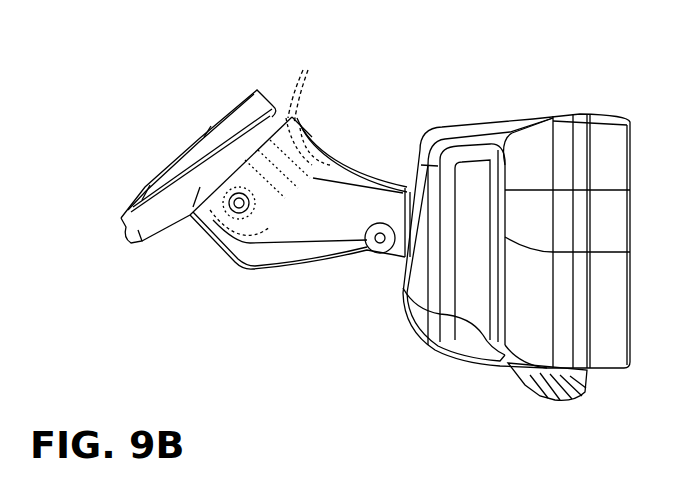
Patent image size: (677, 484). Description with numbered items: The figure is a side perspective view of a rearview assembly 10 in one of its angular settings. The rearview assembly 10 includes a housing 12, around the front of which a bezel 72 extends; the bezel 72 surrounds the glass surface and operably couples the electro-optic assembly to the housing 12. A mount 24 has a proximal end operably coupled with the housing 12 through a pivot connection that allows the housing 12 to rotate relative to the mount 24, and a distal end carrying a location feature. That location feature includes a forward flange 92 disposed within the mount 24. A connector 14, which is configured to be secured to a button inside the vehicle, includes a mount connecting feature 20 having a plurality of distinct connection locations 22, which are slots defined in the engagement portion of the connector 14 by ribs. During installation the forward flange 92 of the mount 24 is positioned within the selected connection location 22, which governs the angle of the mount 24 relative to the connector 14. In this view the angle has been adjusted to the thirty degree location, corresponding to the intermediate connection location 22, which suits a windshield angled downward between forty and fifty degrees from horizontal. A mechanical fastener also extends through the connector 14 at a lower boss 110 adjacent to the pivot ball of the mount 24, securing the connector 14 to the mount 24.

The rearview assembly 10 is at (588, 96).
The housing 12 is at (535, 328).
The connector 14 is at (215, 148).
The mount connecting feature 20 is at (313, 189).
The distinct connection locations 22 is at (385, 103).
The mount 24 is at (317, 227).
The bezel 72 is at (613, 345).
The forward flange 92 is at (305, 122).
The lower boss 110 is at (382, 255).